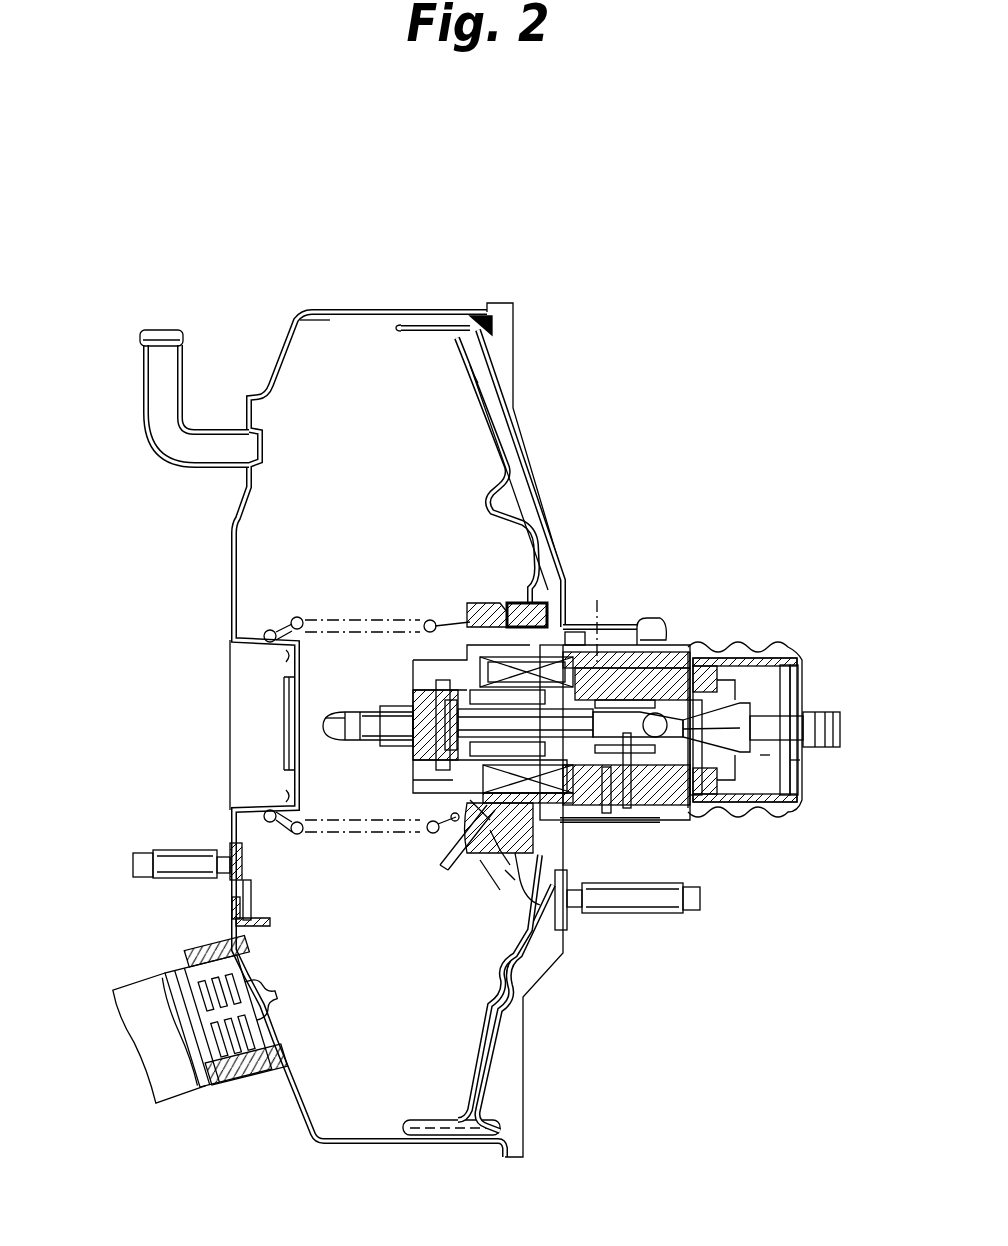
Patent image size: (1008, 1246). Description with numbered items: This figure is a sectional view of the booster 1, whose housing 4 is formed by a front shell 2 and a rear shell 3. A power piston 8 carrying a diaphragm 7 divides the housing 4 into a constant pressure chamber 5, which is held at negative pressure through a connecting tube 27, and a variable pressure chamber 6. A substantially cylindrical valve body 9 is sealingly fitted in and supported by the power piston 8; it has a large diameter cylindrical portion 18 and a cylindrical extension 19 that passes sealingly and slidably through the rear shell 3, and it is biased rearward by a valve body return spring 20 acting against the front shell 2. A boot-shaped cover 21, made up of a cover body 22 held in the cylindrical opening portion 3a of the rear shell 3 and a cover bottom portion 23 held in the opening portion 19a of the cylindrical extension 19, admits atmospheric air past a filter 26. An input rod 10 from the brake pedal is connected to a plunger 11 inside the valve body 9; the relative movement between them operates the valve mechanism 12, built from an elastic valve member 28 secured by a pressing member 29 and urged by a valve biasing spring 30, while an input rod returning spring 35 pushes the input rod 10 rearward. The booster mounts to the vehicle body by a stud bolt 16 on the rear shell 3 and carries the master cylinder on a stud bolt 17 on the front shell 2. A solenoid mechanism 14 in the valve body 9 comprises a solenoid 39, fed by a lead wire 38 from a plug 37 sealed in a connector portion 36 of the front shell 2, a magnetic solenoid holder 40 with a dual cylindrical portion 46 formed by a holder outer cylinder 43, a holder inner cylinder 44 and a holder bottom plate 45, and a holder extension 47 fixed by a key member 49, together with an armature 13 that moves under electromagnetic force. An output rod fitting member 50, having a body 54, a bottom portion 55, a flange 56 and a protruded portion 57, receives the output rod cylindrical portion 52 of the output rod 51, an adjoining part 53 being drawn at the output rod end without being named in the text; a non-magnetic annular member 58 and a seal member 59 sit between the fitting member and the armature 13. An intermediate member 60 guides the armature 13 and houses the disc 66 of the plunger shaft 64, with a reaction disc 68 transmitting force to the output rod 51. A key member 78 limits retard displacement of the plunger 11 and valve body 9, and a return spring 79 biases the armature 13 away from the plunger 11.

The booster 1 is at (681, 178).
The front shell 2 is at (368, 312).
The rear shell 3 is at (520, 302).
The cylindrical opening portion 3a is at (645, 618).
The housing 4 is at (556, 217).
The constant pressure chamber 5 is at (318, 322).
The variable pressure chamber 6 is at (515, 478).
The diaphragm 7 is at (415, 336).
The power piston 8 is at (476, 375).
The valve body 9 is at (672, 335).
The input rod 10 is at (825, 712).
The plunger 11 is at (612, 650).
The valve mechanism 12 is at (700, 810).
The armature 13 is at (415, 832).
The solenoid mechanism 14 is at (318, 850).
The stud bolt 16 is at (632, 896).
The stud bolt 17 is at (180, 861).
The valve body large diameter cylindrical portion 18 is at (562, 645).
The cylindrical extension 19 is at (697, 640).
The opening portion 19a is at (790, 660).
The valve body return spring 20 is at (302, 612).
The boot-shaped cover 21 is at (885, 878).
The cover body 22 is at (772, 760).
The cover bottom portion 23 is at (800, 775).
The filter 26 is at (772, 790).
The connecting tube 27 is at (180, 363).
The valve member 28 is at (685, 800).
The pressing member 29 is at (735, 660).
The valve biasing spring 30 is at (804, 700).
The input rod returning spring 35 is at (750, 660).
The connector portion 36 is at (258, 1077).
The plug 37 is at (177, 990).
The lead wire 38 is at (445, 850).
The solenoid 39 is at (400, 872).
The solenoid holder 40 is at (365, 930).
The holder outer cylinder 43 is at (505, 855).
The holder inner cylinder 44 is at (495, 835).
The holder bottom plate 45 is at (510, 875).
The dual cylindrical portion 46 is at (425, 903).
The holder extension 47 is at (495, 930).
The key member 49 is at (625, 810).
The output rod fitting member 50 is at (335, 478).
The output rod 51 is at (328, 726).
The output rod cylindrical portion 52 is at (415, 779).
The sleeve 53 is at (400, 769).
The output rod fitting member body 54 is at (453, 630).
The output rod fitting member bottom portion 55 is at (462, 620).
The output rod fitting member flange 56 is at (480, 627).
The output rod fitting member protruded portion 57 is at (490, 612).
The non-magnetic annular member 58 is at (488, 598).
The seal member 59 is at (425, 690).
The intermediate member 60 is at (440, 716).
The plunger shaft 64 is at (578, 632).
The disc 66 is at (400, 746).
The reaction disc 68 is at (380, 712).
The key member 78 is at (632, 815).
The return spring 79 is at (605, 599).